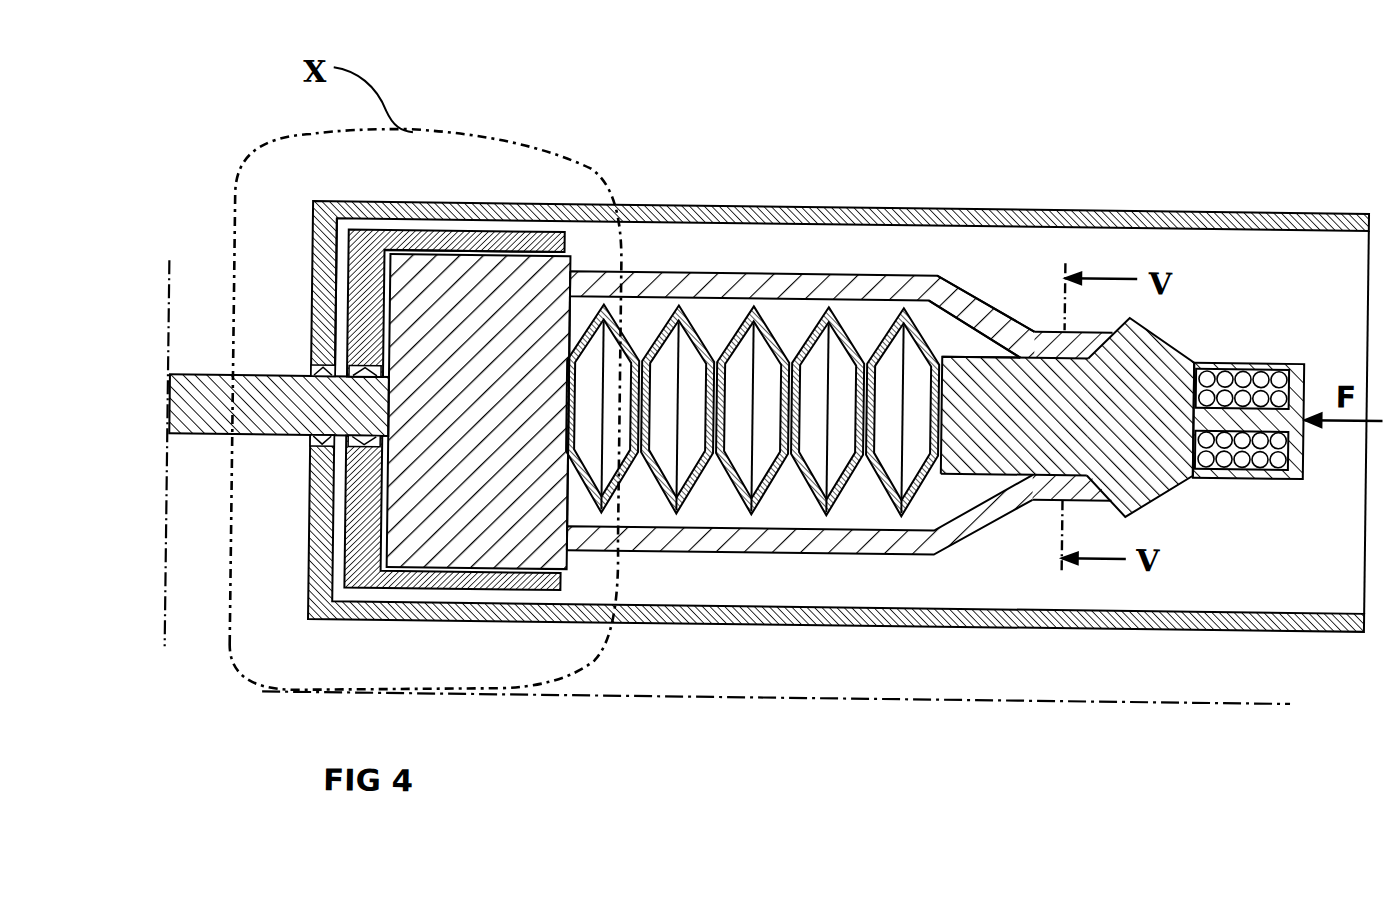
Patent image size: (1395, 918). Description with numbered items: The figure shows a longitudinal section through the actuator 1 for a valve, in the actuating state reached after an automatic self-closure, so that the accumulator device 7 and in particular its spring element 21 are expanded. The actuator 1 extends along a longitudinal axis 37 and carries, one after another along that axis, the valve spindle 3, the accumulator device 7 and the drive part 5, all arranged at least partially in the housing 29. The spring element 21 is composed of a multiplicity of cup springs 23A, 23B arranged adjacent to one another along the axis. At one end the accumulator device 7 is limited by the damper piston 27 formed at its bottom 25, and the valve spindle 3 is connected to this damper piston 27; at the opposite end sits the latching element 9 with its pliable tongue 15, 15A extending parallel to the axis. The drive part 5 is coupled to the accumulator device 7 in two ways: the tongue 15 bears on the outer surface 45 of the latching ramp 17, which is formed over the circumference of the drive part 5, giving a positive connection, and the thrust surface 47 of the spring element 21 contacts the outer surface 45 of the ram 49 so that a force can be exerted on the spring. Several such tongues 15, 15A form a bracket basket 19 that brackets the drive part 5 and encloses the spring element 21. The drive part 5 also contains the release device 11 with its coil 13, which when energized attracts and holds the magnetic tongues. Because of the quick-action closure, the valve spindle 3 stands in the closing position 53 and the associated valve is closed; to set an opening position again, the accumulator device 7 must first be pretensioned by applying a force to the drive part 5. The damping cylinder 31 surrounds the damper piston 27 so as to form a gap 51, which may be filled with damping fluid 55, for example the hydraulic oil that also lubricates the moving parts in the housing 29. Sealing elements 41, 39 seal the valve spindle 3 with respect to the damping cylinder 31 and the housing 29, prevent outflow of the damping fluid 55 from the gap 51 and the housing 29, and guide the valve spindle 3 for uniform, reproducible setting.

The actuator 1 is at (513, 168).
The valve spindle 3 is at (223, 387).
The drive part 5 is at (1300, 352).
The accumulator device 7 is at (707, 264).
The latching element 9 is at (1022, 321).
The release device 11 is at (1230, 352).
The coil 13 is at (1247, 447).
The tongue 15 is at (1063, 338).
The tongue 15A is at (1054, 481).
The latching ramp 17 is at (1165, 469).
The bracket basket 19 is at (868, 535).
The spring element 21 is at (856, 300).
The cup spring 23A is at (783, 464).
The cup spring 23B is at (730, 482).
The bottom 25 is at (582, 500).
The damper piston 27 is at (468, 530).
The housing 29 is at (1188, 201).
The damping cylinder 31 is at (400, 580).
The longitudinal axis 37 is at (1106, 690).
The sealing element 39 is at (312, 372).
The sealing element 41 is at (358, 452).
The outer surface 45 is at (998, 337).
The thrust surface 47 is at (946, 378).
The ram 49 is at (983, 439).
The gap 51 is at (438, 257).
The closing position 53 is at (169, 562).
The damping fluid 55 is at (353, 323).